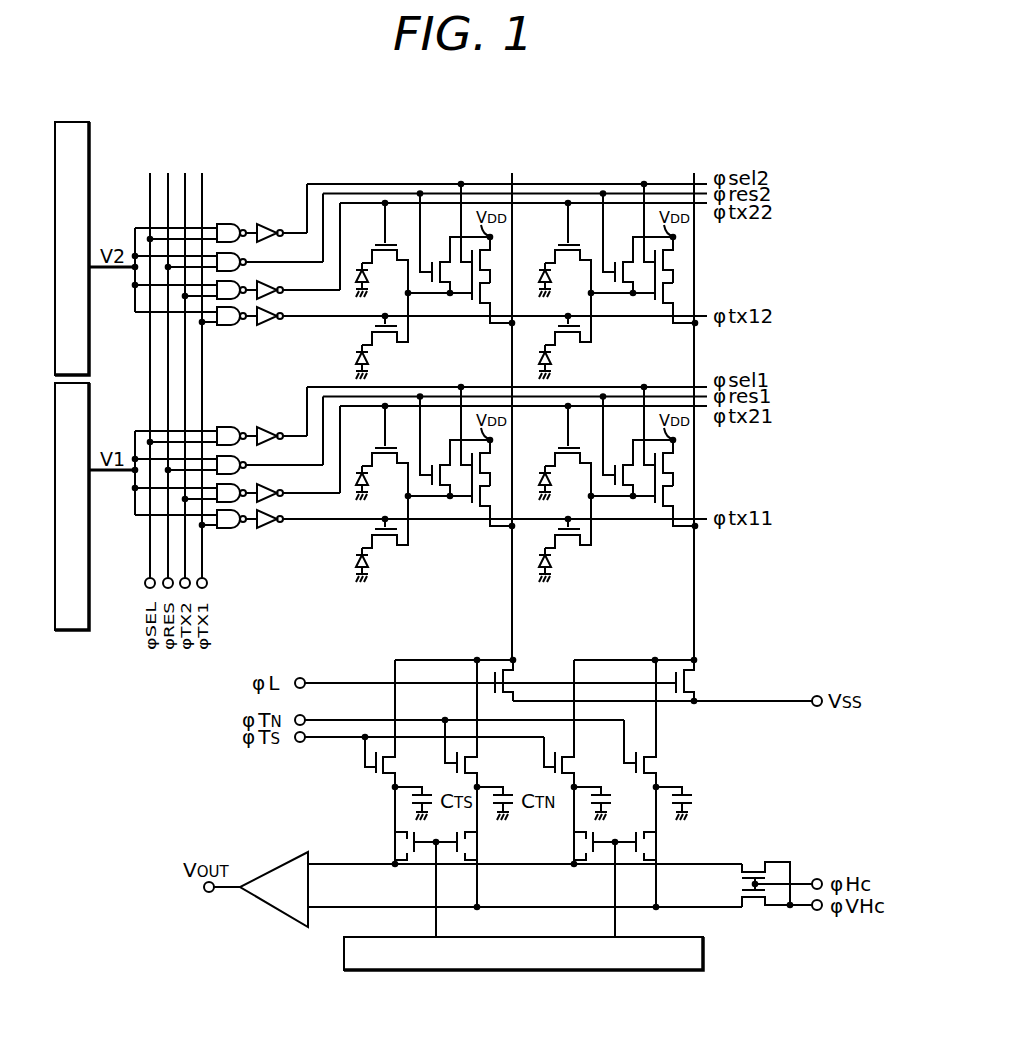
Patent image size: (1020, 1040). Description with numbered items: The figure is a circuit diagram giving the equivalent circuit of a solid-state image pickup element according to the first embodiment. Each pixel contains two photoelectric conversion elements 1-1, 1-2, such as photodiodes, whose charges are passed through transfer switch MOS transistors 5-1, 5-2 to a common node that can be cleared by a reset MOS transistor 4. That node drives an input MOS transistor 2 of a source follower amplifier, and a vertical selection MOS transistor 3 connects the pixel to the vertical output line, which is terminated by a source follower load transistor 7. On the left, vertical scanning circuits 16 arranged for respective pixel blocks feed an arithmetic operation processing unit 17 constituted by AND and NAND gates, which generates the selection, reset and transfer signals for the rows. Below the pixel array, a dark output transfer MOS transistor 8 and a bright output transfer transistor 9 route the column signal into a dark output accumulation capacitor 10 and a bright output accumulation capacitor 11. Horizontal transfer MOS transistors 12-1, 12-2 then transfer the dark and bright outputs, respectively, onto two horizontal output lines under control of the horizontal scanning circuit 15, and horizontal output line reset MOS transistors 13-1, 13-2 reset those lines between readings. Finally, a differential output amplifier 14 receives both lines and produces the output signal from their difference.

The photoelectric conversion element 1-1 is at (360, 350).
The photoelectric conversion element 1-2 is at (360, 260).
The input MOS transistor of source follower amplifier 2 is at (492, 293).
The vertical selection MOS transistor 3 is at (497, 260).
The reset MOS transistor 4 is at (436, 262).
The transfer switch MOS transistor 5-1 is at (375, 327).
The transfer switch MOS transistor 5-2 is at (380, 241).
The source follower load transistor 7 is at (697, 680).
The dark output transfer MOS transistor 8 is at (482, 762).
The bright output transfer transistor 9 is at (365, 771).
The dark output accumulation capacitor 10 is at (517, 812).
The bright output accumulation capacitor 11 is at (412, 800).
The horizontal transfer MOS transistor 12-1 is at (480, 848).
The horizontal transfer MOS transistor 12-2 is at (394, 842).
The horizontal output line reset MOS transistor 13-1 is at (755, 862).
The horizontal output line reset MOS transistor 13-2 is at (753, 905).
The differential output amplifier 14 is at (273, 903).
The horizontal scanning circuit 15 is at (652, 971).
The vertical scanning circuit 16 is at (74, 632).
The arithmetic operation processing unit 17 is at (283, 536).